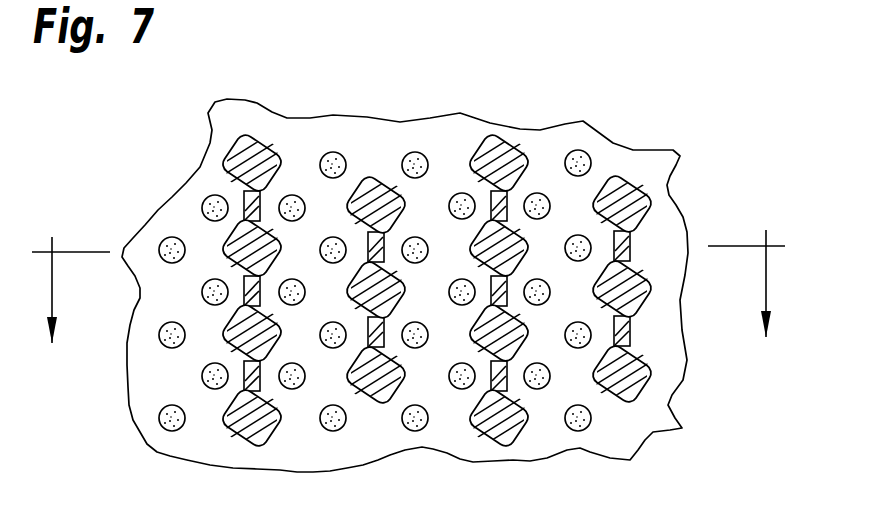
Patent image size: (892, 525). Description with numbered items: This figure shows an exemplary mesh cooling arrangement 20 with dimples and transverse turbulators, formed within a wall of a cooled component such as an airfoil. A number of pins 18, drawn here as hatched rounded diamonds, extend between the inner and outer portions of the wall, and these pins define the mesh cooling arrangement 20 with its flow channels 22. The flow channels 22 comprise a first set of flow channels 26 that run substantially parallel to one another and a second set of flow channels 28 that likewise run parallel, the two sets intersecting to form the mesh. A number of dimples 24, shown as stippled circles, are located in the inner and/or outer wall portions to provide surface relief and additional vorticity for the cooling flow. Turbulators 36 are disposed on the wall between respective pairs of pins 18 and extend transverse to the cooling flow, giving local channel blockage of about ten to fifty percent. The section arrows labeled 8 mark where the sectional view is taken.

The mesh cooling arrangement 20 is at (707, 92).
The pins 18 is at (632, 196).
The flow channels 22 is at (375, 290).
The dimples 24 is at (585, 160).
The first set of flow channels 26 is at (234, 191).
The second set of flow channels 28 is at (527, 184).
The turbulators 36 is at (246, 388).
The section line 8- 8 is at (413, 280).